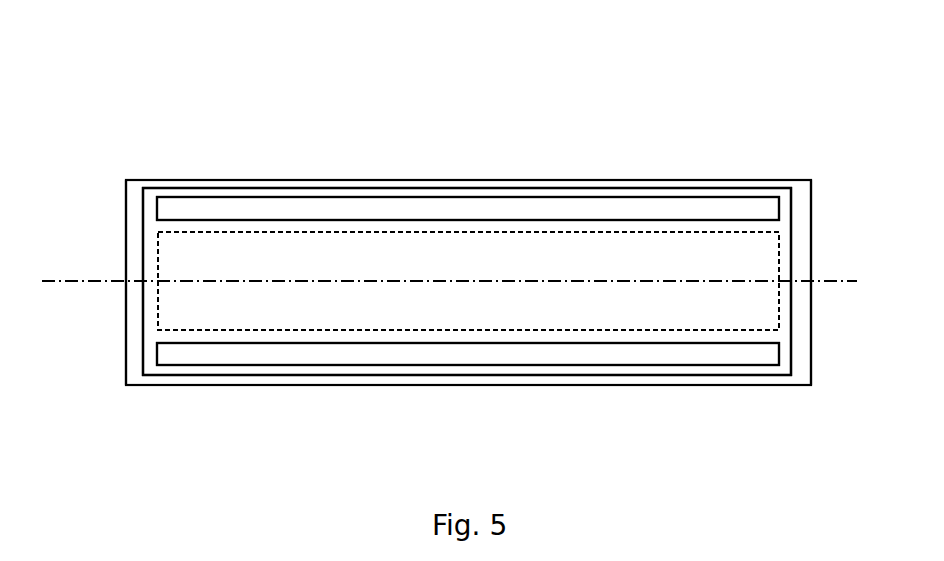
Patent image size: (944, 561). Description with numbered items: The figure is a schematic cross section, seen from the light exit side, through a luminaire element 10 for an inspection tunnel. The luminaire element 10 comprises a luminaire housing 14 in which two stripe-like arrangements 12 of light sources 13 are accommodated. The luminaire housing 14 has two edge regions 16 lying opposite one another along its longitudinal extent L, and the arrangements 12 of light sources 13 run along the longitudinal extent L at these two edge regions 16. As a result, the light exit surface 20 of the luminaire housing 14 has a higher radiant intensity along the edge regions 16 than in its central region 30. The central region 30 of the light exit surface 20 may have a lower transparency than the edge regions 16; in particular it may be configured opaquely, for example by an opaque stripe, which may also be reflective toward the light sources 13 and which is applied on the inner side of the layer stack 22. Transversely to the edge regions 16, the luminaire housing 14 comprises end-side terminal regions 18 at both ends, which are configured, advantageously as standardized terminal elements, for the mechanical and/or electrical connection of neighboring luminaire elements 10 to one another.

The luminaire element 10 is at (652, 96).
The stripe-like arrangement 12 is at (567, 197).
The light source 13 is at (468, 281).
The luminaire housing 14 is at (272, 179).
The edge region 16 is at (697, 181).
The end-side terminal region 18 is at (126, 222).
The light exit surface 20 is at (778, 188).
The layer stack 22 is at (467, 281).
The central region 30 is at (362, 232).
The longitudinal extent L is at (449, 269).